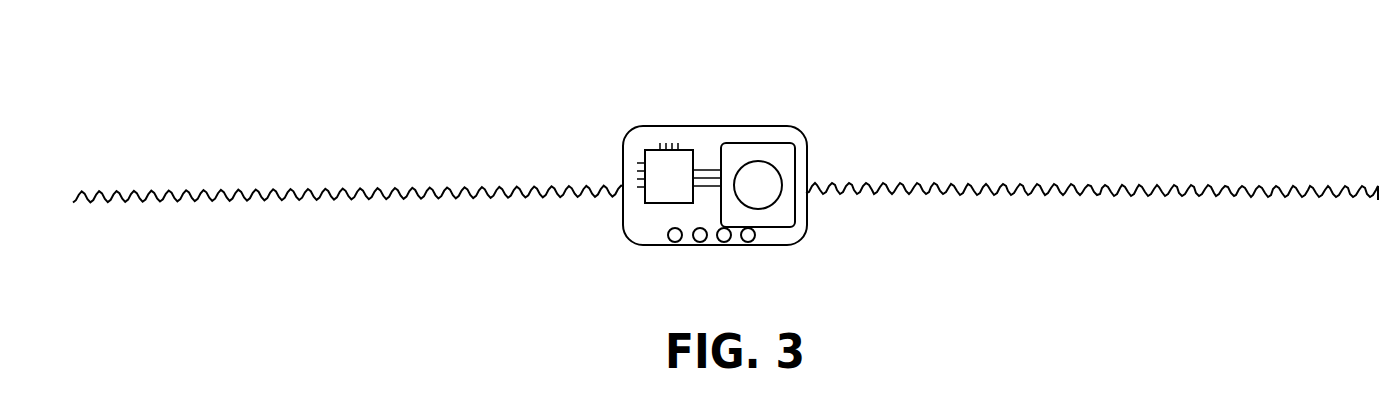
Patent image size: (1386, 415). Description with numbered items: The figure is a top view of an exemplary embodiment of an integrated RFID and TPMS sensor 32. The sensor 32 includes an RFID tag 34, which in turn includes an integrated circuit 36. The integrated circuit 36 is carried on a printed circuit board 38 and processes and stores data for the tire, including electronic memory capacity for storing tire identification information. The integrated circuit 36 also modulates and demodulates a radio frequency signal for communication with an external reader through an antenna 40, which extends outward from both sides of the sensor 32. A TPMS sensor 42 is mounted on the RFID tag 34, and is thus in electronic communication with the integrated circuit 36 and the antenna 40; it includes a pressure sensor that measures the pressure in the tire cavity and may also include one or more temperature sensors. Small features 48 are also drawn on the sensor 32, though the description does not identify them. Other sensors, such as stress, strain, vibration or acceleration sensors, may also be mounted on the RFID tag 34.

The RFID and TPMS sensor 32 is at (749, 119).
The RFID tag 34 is at (647, 125).
The integrated circuit 36 is at (693, 150).
The printed circuit board 38 is at (799, 133).
The antenna 40 is at (452, 187).
The TPMS sensor 42 is at (755, 197).
The indicator lights 48 is at (675, 238).